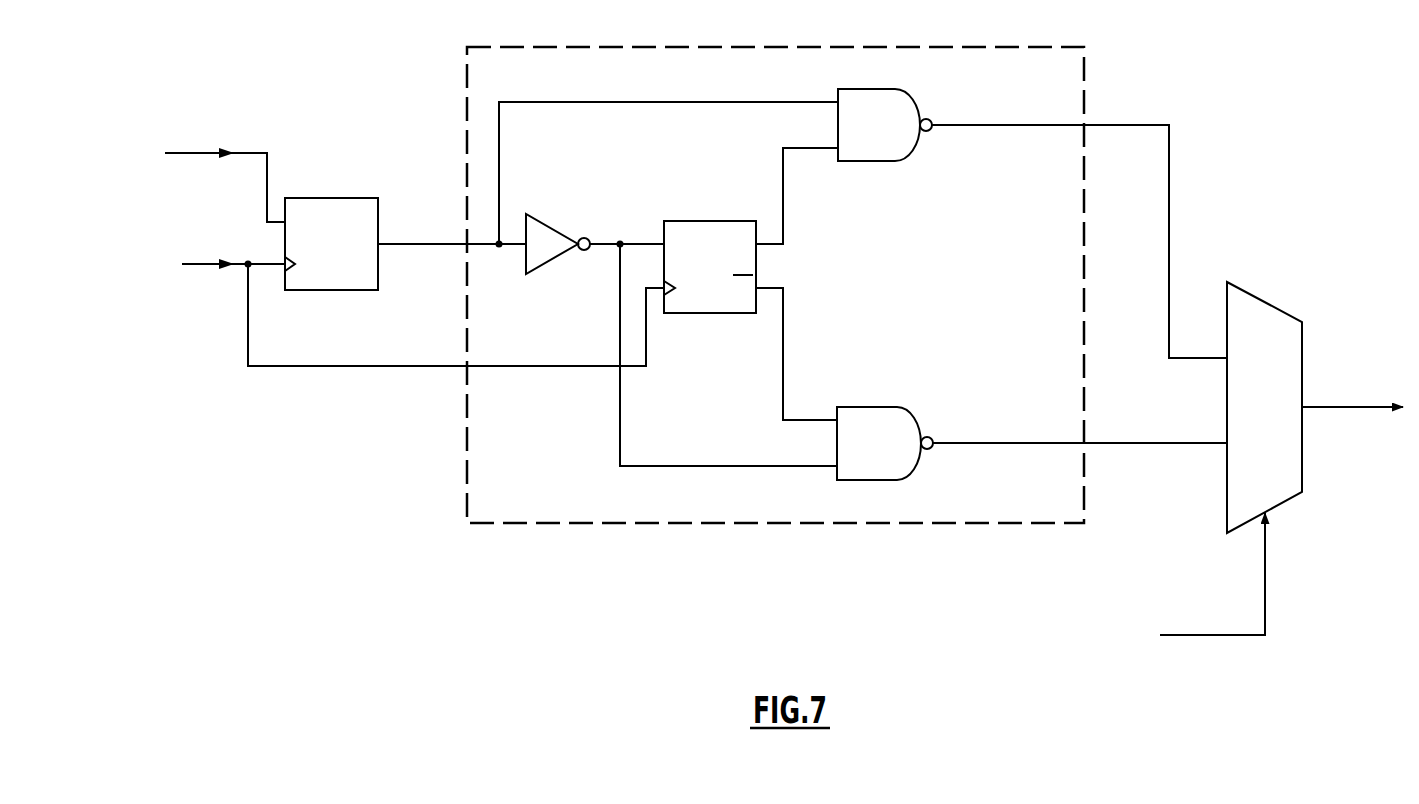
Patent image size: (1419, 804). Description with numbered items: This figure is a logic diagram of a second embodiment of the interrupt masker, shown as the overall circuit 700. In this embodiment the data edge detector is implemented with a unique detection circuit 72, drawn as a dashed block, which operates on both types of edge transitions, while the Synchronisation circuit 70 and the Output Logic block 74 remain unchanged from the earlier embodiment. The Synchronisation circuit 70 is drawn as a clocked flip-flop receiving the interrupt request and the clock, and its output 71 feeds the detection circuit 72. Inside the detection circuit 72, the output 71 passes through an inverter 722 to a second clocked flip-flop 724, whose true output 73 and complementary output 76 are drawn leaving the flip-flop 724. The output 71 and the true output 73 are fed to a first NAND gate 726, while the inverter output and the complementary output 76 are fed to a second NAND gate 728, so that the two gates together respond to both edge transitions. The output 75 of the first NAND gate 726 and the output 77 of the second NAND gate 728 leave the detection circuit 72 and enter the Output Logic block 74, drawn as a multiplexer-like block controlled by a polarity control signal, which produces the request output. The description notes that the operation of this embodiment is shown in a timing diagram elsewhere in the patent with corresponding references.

The request polarity control circuit 700 is at (1282, 75).
The Synchronisation circuit 70 is at (319, 192).
The flip-flop output signal 71 is at (396, 240).
The detection circuit 72 is at (1068, 74).
The inverter 722 is at (549, 224).
The second flip-flop 724 is at (699, 220).
The Q output of second flip-flop 73 is at (787, 213).
The inverted Q output of second flip-flop 76 is at (787, 324).
The first NAND gate 726 is at (911, 96).
The second NAND gate 728 is at (911, 413).
The first NAND gate output 75 is at (1116, 120).
The second NAND gate output 77 is at (1131, 441).
The Output Logic block 74 is at (1282, 307).